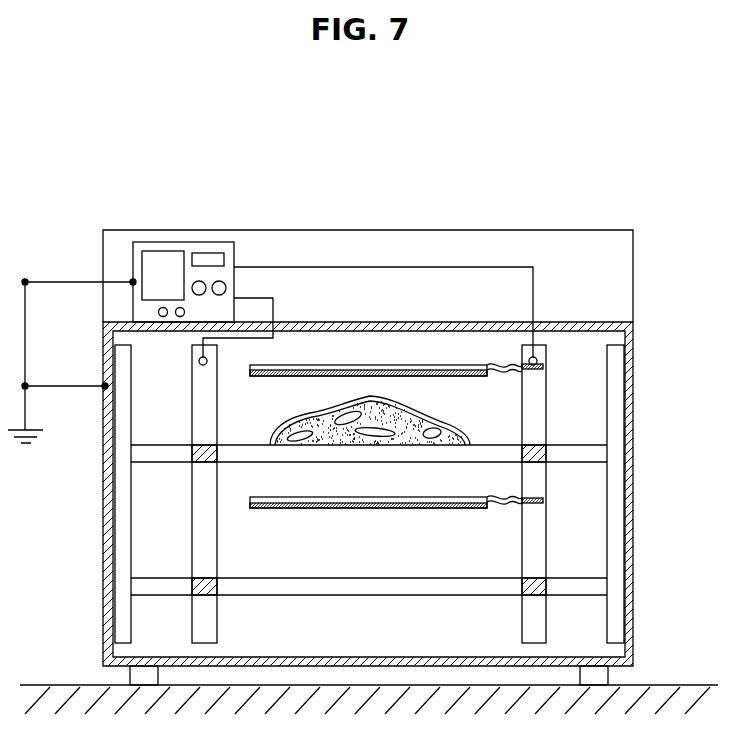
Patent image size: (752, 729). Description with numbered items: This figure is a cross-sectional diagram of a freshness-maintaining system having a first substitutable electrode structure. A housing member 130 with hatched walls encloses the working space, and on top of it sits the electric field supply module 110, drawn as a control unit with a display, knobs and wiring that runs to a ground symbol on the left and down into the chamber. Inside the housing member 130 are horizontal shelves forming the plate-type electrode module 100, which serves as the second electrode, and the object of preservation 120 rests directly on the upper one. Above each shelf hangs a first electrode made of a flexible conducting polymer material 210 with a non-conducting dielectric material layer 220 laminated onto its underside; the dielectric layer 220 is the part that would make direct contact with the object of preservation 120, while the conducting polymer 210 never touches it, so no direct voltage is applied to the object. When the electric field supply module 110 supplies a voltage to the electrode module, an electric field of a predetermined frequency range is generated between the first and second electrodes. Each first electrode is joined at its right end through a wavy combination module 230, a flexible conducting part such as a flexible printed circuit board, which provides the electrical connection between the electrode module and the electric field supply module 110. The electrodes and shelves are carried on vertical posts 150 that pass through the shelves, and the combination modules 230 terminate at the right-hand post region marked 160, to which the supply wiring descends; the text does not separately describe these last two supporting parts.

The electrode module 100 is at (311, 459).
The electric field supply module 110 is at (182, 242).
The object of preservation 120 is at (408, 412).
The housing member 130 is at (633, 452).
The support post 150 is at (203, 462).
The electrode post 160 is at (543, 365).
The flexible conducting polymer material 210 is at (340, 366).
The non-conducting dielectric material layer 220 is at (293, 377).
The combination module 230 is at (499, 376).